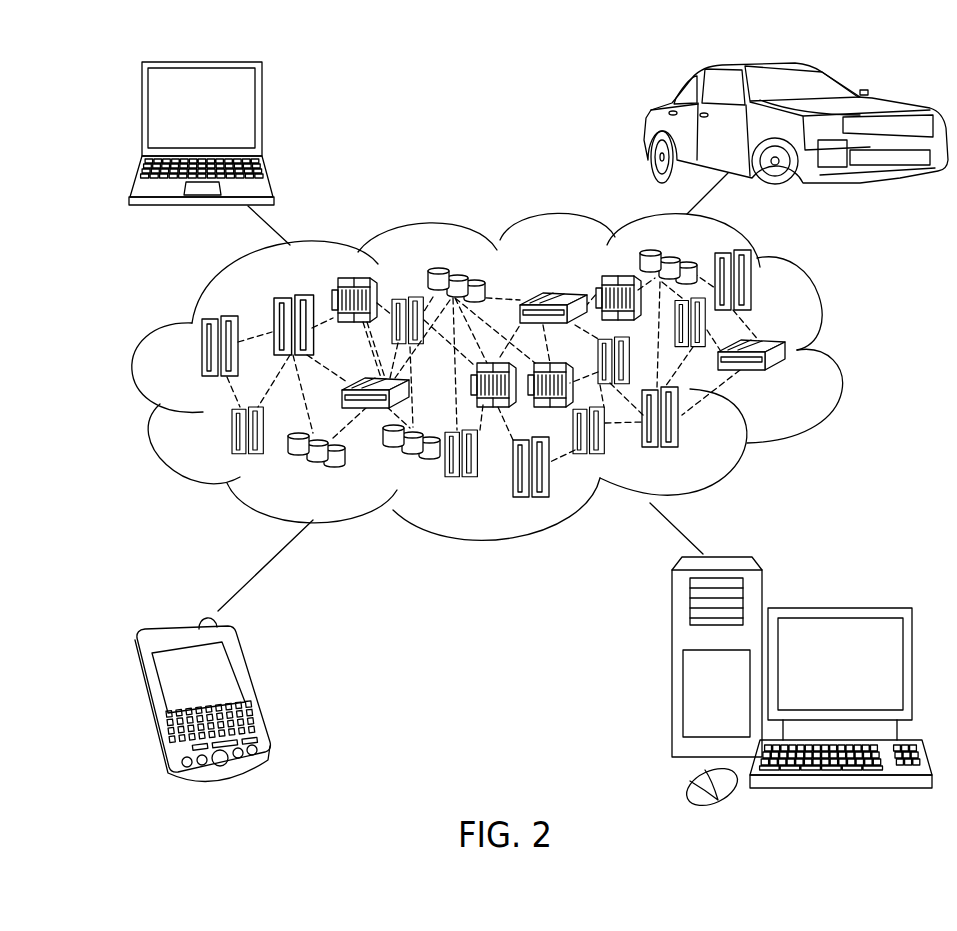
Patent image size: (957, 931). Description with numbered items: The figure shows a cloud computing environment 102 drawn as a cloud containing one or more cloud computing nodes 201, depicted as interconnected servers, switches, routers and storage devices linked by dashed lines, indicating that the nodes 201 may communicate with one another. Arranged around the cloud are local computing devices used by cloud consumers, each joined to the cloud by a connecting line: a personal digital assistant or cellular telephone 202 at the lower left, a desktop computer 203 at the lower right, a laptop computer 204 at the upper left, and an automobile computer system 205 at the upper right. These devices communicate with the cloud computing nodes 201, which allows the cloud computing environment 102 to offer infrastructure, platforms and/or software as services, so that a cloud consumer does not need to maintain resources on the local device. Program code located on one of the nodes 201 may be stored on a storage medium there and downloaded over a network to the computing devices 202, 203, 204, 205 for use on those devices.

The cloud computing environment 102 is at (838, 353).
The cloud computing nodes 201 is at (799, 383).
The personal digital assistant or cellular telephone 202 is at (253, 688).
The desktop computer 203 is at (837, 604).
The laptop computer 204 is at (262, 113).
The automobile computer system 205 is at (646, 128).